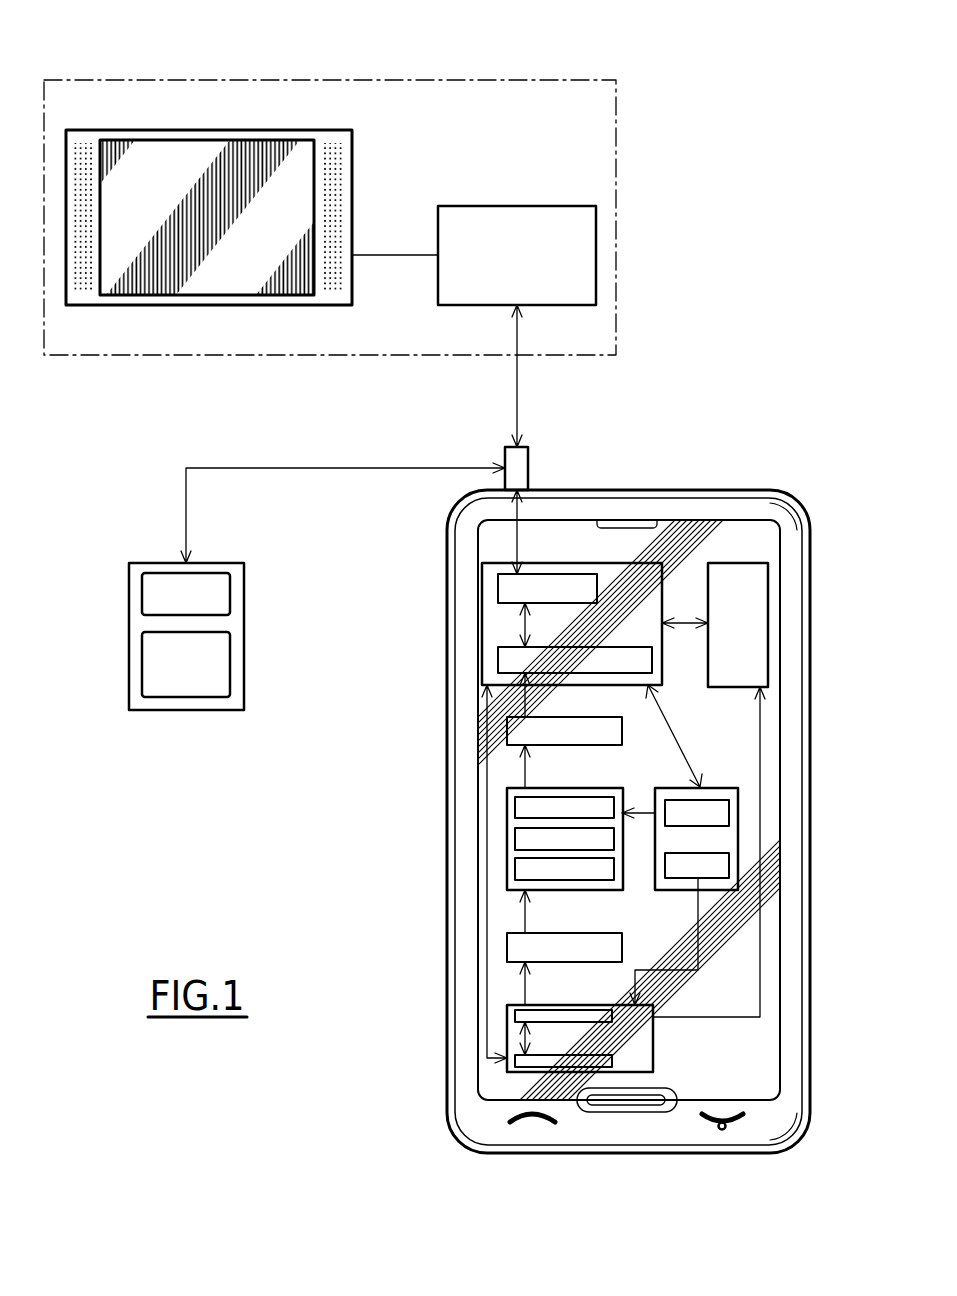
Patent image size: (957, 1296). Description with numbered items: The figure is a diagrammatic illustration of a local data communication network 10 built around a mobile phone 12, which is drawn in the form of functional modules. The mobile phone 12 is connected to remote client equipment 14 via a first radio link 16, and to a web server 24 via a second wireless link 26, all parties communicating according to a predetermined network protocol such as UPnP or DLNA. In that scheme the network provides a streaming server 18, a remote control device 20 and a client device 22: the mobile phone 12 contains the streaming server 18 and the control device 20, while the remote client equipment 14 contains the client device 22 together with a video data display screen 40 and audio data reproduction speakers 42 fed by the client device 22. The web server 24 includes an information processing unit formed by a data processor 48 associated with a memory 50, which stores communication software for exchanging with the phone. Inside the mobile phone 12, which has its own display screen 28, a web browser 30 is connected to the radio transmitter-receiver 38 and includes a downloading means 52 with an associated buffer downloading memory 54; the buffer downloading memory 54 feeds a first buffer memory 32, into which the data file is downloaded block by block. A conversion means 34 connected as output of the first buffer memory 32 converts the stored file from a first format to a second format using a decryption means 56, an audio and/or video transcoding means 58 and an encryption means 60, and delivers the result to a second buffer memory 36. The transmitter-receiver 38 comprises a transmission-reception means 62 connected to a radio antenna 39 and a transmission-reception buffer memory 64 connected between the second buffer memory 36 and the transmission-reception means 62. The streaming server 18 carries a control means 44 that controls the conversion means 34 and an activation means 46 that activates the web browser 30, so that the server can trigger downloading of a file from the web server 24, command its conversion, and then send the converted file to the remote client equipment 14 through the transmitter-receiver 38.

The local data communication network 10 is at (795, 313).
The mobile phone 12 is at (810, 627).
The remote client equipment 14 is at (548, 80).
The first radio link 16 is at (519, 398).
The streaming server 18 is at (720, 788).
The remote control device 20 is at (728, 636).
The client device 22 is at (507, 268).
The web server 24 is at (245, 660).
The second wireless link 26 is at (333, 468).
The display screen 28 is at (745, 1058).
The web browser 30 is at (655, 1040).
The first buffer memory 32 is at (603, 933).
The conversion means 34 is at (605, 788).
The second buffer memory 36 is at (507, 733).
The radio transmitter-receiver 38 is at (625, 563).
The radio antenna 39 is at (530, 479).
The video data display screen 40 is at (208, 130).
The audio data reproduction speakers 42 is at (84, 160).
The control means 44 is at (729, 812).
The activation means 46 is at (729, 865).
The data processor 48 is at (176, 609).
The memory 50 is at (176, 680).
The downloading means 52 is at (515, 1063).
The buffer downloading memory 54 is at (515, 1015).
The decryption means 56 is at (515, 868).
The audio and/or video transcoding means 58 is at (515, 838).
The encryption means 60 is at (515, 808).
The transmission-reception means 62 is at (498, 590).
The transmission-reception buffer memory 64 is at (498, 657).